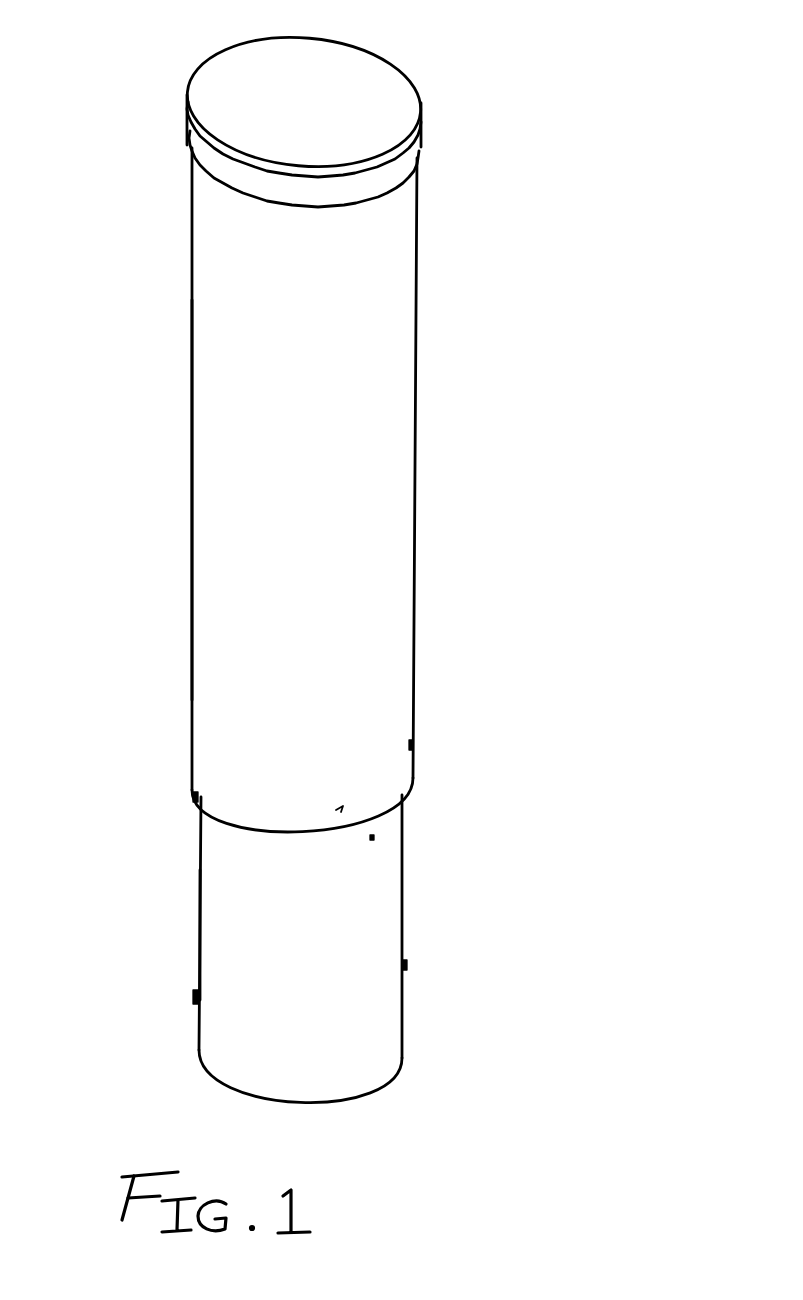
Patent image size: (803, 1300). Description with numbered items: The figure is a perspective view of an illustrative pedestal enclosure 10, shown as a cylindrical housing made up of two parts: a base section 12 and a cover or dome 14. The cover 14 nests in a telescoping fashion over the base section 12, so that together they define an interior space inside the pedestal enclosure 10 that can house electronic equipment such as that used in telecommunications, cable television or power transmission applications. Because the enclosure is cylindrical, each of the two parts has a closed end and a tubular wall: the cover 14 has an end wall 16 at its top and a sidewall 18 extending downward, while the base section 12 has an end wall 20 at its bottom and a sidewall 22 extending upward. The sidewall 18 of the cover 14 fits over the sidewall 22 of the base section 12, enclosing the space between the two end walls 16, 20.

The pedestal enclosure 10 is at (457, 217).
The base section 12 is at (400, 895).
The cover 14 is at (403, 483).
The end wall 16 is at (362, 90).
The sidewall 18 is at (207, 447).
The end wall 20 is at (365, 1088).
The sidewall 22 is at (227, 947).